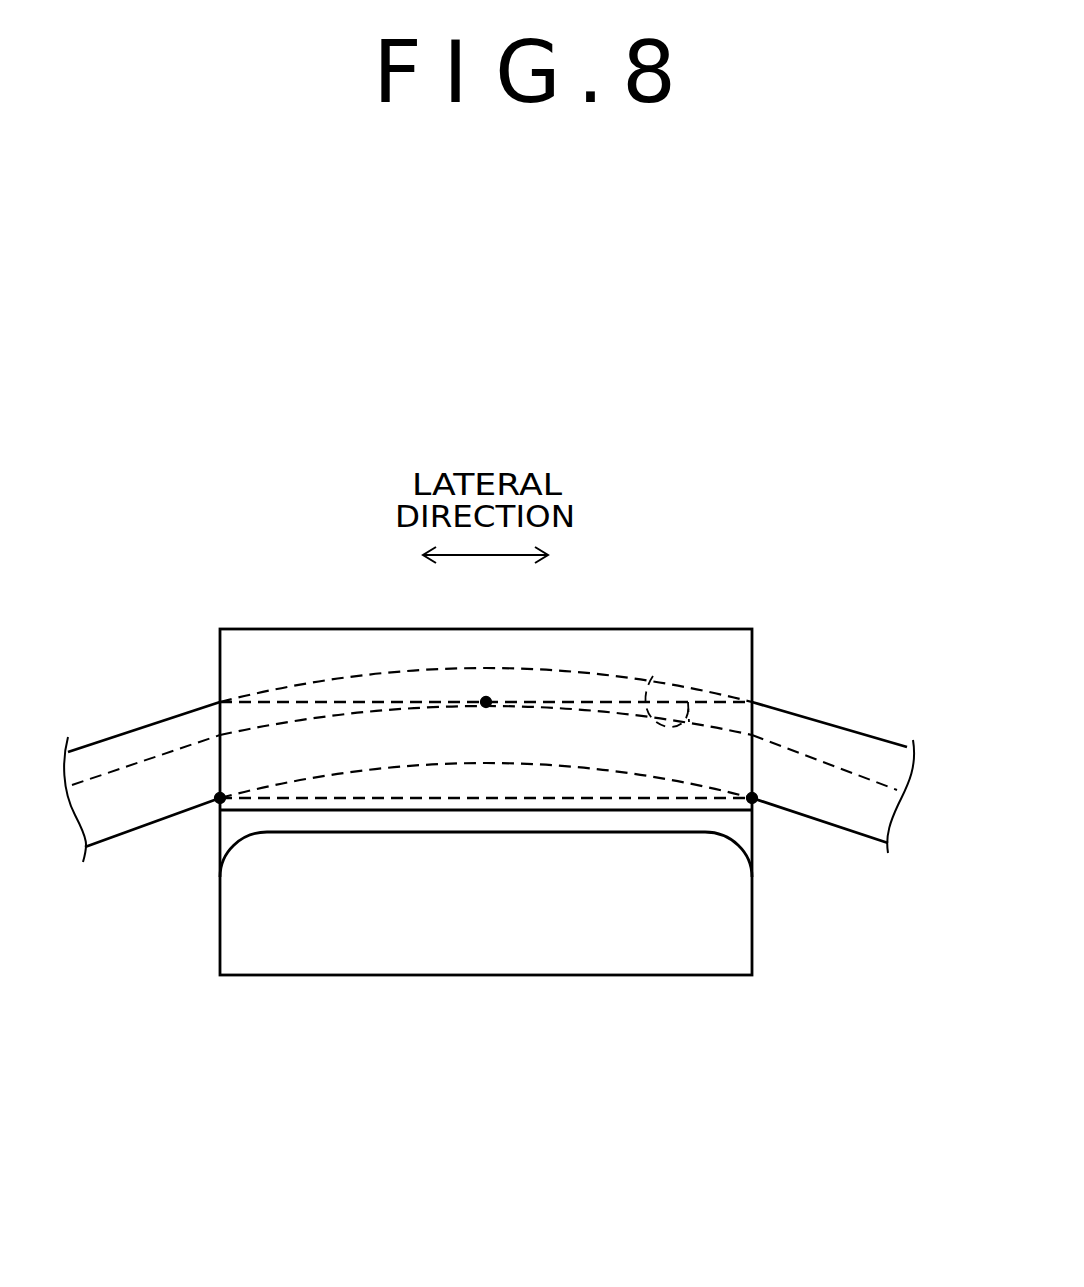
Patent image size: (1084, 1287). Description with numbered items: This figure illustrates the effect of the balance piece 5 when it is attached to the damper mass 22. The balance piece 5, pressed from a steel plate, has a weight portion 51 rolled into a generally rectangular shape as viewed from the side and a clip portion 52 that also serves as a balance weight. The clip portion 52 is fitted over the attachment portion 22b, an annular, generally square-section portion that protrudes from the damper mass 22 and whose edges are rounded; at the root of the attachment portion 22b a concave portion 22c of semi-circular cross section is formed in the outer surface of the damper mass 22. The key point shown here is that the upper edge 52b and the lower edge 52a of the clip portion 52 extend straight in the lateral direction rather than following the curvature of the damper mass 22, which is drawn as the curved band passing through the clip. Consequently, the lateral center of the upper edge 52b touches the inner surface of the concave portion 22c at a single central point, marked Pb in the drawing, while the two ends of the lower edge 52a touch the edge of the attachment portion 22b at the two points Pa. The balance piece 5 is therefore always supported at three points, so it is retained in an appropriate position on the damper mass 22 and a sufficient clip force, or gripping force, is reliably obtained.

The balance piece 5 is at (502, 787).
The damper mass 22 is at (513, 832).
The attachment portion 22b is at (567, 765).
The concave portion 22c is at (715, 726).
The weight portion 51 is at (332, 978).
The clip portion 52 is at (521, 783).
The lower edge 52a is at (648, 800).
The upper edge 52b is at (653, 676).
The contact points Pa is at (220, 798).
The point Pb is at (486, 702).